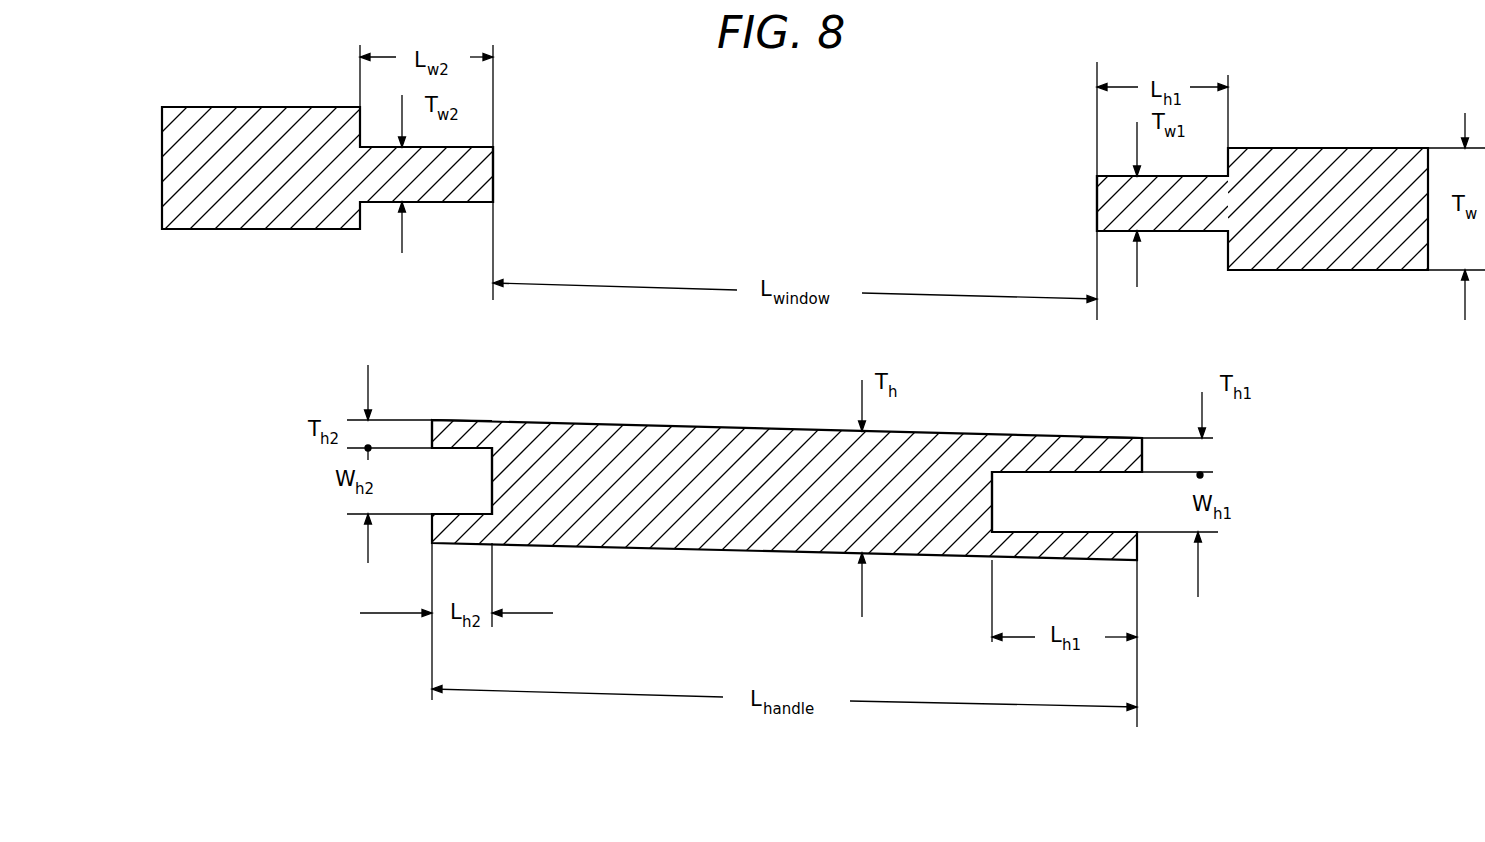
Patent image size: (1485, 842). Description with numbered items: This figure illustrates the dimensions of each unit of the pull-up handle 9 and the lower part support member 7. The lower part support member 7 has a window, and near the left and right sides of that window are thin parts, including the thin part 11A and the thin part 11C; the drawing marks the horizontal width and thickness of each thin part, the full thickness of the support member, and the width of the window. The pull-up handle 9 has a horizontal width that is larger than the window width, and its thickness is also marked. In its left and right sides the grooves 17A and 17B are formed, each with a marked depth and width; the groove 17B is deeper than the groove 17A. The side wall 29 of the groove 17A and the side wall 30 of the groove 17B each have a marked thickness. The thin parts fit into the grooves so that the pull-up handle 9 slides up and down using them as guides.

The lower part support member 7 is at (256, 107).
The thin part 11A is at (437, 205).
The window end portion 11C is at (1180, 232).
The pull-up handle 9 is at (691, 557).
The side wall 29 is at (447, 420).
The side wall 30 is at (1123, 460).
The groove 17A is at (491, 424).
The groove 17B is at (995, 487).